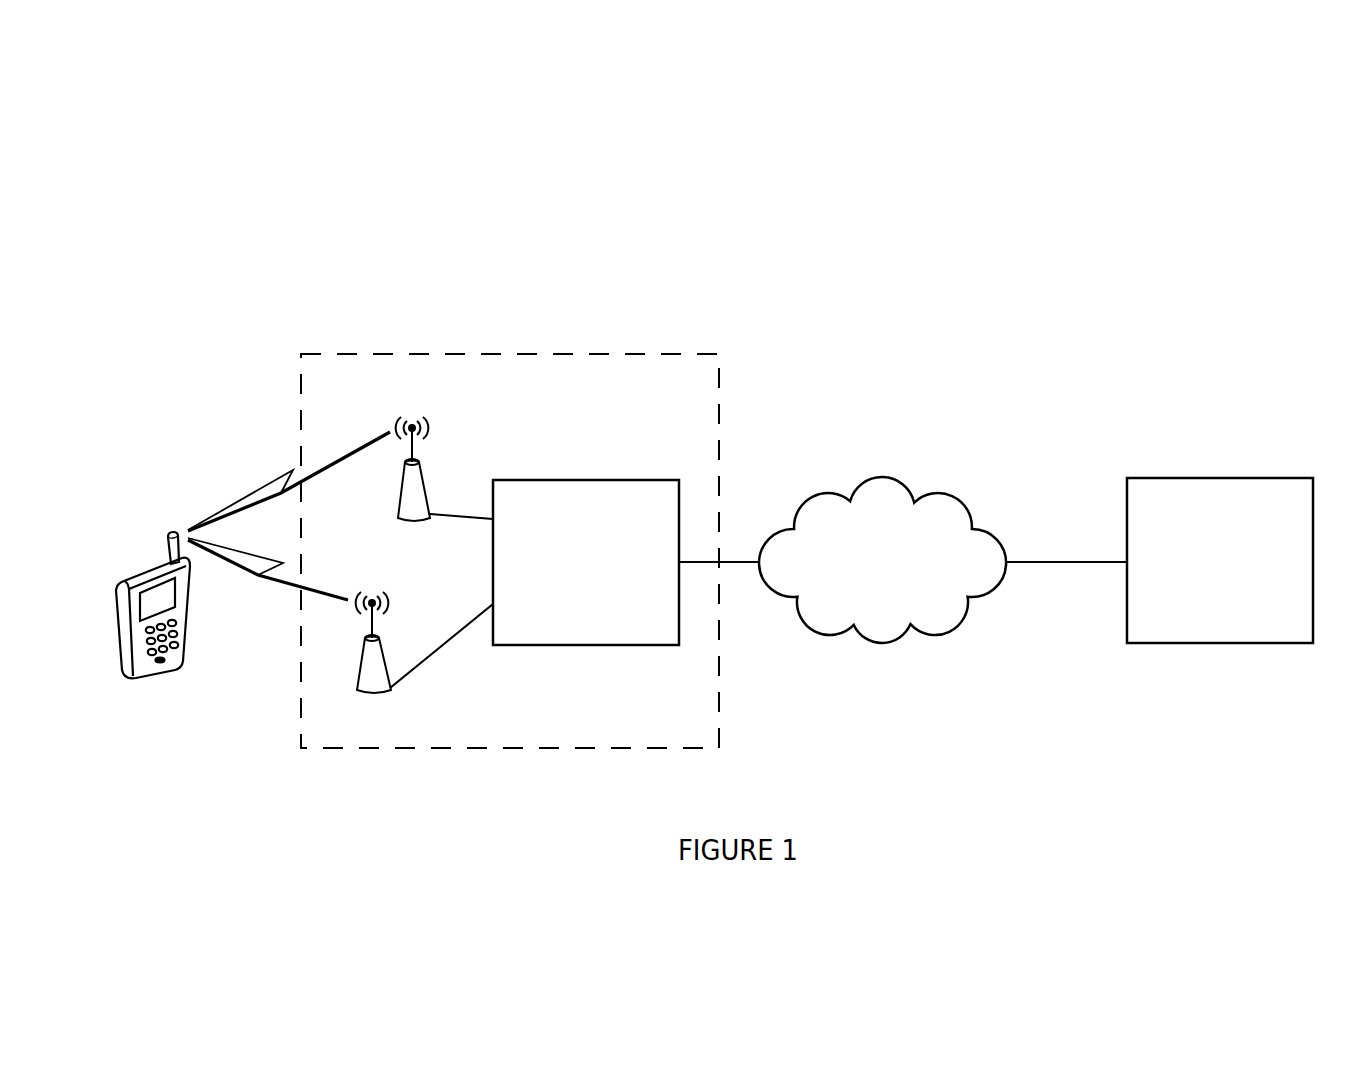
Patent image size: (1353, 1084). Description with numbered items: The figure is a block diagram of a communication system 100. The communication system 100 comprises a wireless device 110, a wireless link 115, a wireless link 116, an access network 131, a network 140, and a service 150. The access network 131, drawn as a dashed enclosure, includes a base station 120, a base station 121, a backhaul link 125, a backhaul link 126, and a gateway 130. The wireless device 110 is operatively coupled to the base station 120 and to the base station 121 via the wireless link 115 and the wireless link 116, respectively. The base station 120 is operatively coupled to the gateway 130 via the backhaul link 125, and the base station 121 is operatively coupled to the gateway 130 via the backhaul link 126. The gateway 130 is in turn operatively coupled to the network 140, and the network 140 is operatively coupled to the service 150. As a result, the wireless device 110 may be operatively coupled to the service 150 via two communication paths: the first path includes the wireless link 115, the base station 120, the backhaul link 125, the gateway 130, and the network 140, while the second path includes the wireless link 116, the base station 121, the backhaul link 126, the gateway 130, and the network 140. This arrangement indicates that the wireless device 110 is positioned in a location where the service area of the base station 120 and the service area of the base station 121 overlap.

The communication system 100 is at (179, 196).
The wireless device 110 is at (138, 681).
The wireless link 115 is at (265, 490).
The wireless link 116 is at (283, 582).
The base station 120 is at (397, 515).
The base station 121 is at (380, 694).
The backhaul link 125 is at (478, 521).
The backhaul link 126 is at (407, 674).
The gateway 130 is at (565, 590).
The access network 131 is at (711, 740).
The network 140 is at (861, 590).
The service 150 is at (1199, 590).